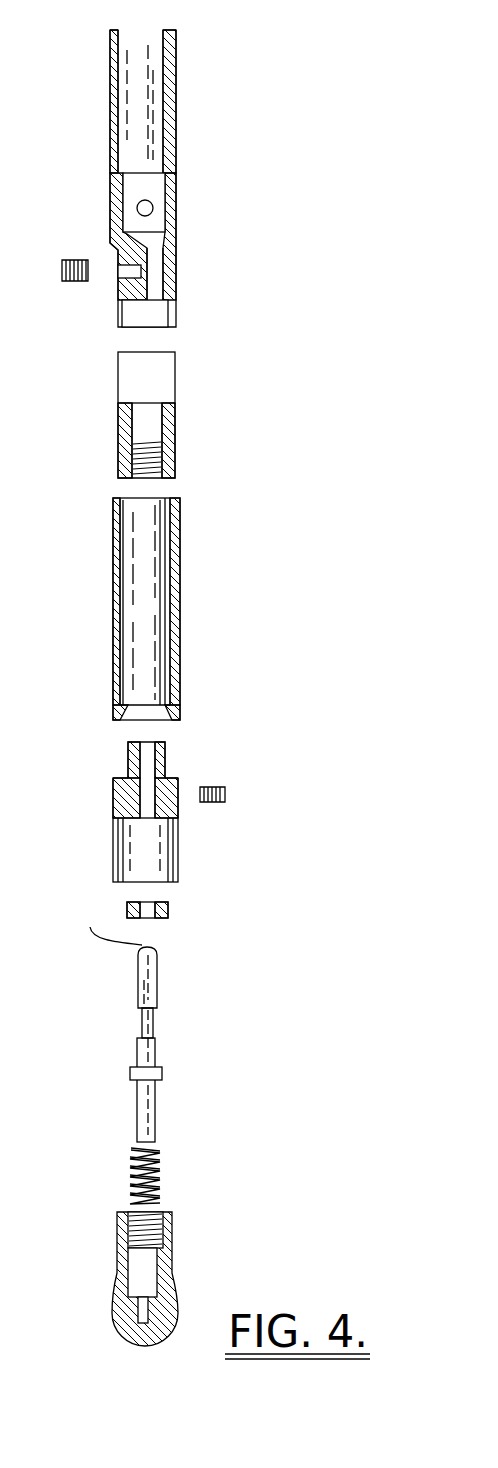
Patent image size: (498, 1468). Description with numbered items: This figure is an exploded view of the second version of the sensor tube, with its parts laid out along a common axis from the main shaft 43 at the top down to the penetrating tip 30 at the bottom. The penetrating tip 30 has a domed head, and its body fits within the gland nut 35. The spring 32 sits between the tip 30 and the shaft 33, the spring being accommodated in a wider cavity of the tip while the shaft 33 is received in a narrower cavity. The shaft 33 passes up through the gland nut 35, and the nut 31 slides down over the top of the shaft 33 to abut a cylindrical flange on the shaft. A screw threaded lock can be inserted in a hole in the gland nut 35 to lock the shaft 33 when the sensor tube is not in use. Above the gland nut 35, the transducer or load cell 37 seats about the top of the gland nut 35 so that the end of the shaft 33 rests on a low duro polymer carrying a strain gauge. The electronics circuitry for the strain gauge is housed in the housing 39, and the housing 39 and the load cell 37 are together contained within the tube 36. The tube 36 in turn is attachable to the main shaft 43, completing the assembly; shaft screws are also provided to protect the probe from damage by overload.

The main shaft 43 is at (176, 185).
The housing 39 is at (175, 378).
The load cell 37 is at (175, 458).
The tube 36 is at (177, 600).
The gland nut 35 is at (178, 852).
The nut 31 is at (168, 908).
The shaft 33 is at (153, 1053).
The spring 32 is at (160, 1175).
The penetrating tip 30 is at (172, 1285).